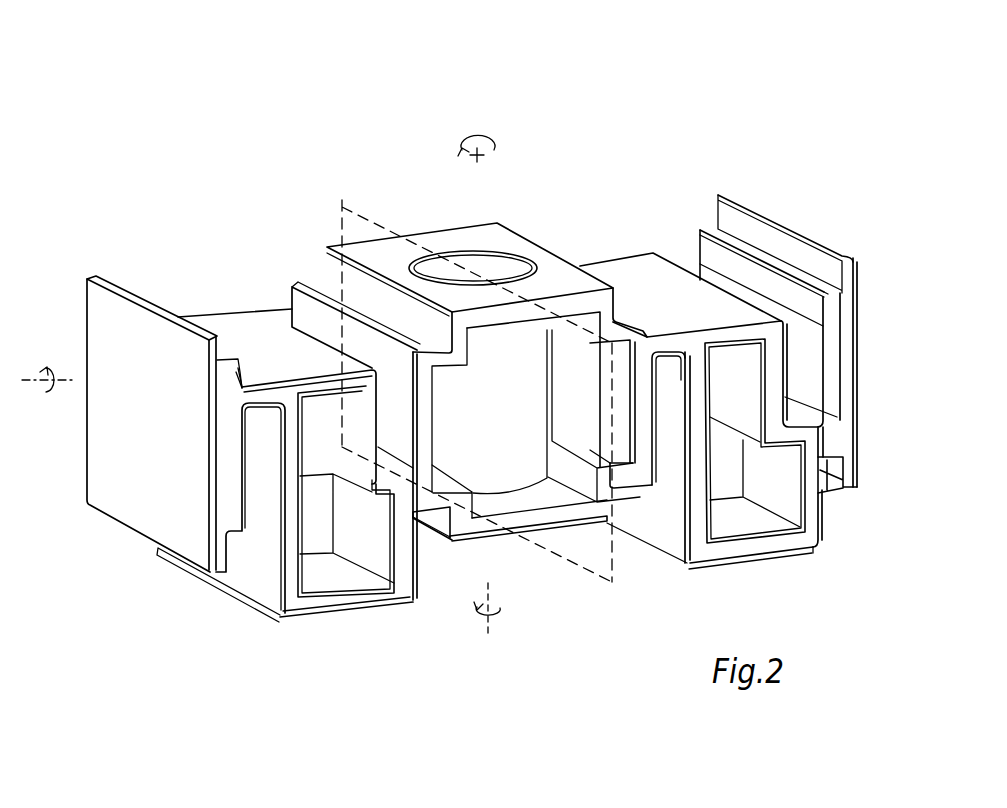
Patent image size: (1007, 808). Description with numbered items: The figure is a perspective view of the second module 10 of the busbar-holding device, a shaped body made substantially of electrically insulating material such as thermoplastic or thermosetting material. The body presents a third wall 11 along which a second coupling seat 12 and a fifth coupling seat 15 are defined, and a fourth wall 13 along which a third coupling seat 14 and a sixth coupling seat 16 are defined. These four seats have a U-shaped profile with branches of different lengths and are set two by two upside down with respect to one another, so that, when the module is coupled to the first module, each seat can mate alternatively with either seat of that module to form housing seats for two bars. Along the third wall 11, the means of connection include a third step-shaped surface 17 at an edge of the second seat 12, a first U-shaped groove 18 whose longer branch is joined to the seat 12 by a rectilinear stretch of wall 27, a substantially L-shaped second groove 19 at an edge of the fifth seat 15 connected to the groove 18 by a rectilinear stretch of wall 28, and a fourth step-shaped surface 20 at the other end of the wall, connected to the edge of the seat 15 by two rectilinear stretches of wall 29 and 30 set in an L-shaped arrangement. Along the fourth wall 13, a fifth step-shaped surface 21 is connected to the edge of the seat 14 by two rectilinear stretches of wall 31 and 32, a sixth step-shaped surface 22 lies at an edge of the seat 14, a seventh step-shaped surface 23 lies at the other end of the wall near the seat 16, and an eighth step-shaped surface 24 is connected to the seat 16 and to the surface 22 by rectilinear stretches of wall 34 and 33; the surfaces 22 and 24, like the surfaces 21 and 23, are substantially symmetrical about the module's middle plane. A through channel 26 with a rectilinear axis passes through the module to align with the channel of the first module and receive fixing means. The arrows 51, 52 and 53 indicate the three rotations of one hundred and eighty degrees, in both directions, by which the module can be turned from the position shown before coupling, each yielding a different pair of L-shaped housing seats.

The second module 10 is at (876, 235).
The third wall 11 is at (556, 618).
The second coupling seat 12 is at (257, 500).
The fourth wall 13 is at (410, 163).
The third coupling seat 14 is at (288, 373).
The fifth coupling seat 15 is at (668, 377).
The sixth coupling seat 16 is at (801, 322).
The third step-shaped surface 17 is at (232, 541).
The first U-shaped groove 18 is at (430, 537).
The second groove 19 is at (631, 502).
The fourth step-shaped surface 20 is at (853, 477).
The fifth step-shaped surface 21 is at (223, 362).
The sixth step-shaped surface 22 is at (320, 340).
The seventh step-shaped surface 23 is at (715, 212).
The eighth step-shaped surface 24 is at (617, 303).
The through channel 26 is at (503, 260).
The rectilinear stretch of wall 27 is at (338, 612).
The rectilinear stretch of wall 28 is at (505, 535).
The rectilinear stretch of wall 29 is at (753, 555).
The rectilinear stretch of wall 30 is at (827, 540).
The rectilinear stretch of wall 31 is at (240, 377).
The rectilinear stretch of wall 32 is at (243, 370).
The rectilinear stretch of wall 33 is at (583, 290).
The rectilinear stretch of wall 34 is at (753, 317).
The arrow 51 is at (502, 610).
The arrow 52 is at (492, 145).
The arrow 53 is at (47, 391).